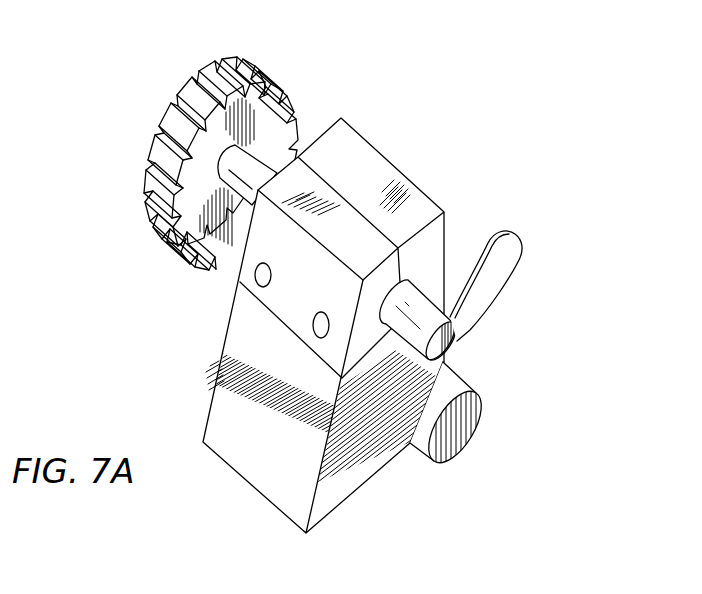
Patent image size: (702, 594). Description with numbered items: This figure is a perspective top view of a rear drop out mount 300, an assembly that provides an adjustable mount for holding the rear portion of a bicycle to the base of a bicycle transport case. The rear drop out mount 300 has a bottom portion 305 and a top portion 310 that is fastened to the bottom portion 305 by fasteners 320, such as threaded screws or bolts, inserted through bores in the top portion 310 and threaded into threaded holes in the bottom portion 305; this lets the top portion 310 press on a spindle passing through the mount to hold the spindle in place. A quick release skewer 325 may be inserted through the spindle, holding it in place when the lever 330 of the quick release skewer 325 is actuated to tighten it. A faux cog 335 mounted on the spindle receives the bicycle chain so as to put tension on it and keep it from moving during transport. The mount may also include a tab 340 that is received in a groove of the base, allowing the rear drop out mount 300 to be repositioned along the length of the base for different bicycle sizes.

The rear drop out mount 300 is at (416, 143).
The bottom portion 305 is at (252, 373).
The top portion 310 is at (280, 238).
The fasteners 320 is at (257, 276).
The quick release skewer 325 is at (443, 340).
The lever 330 is at (503, 268).
The faux cog 335 is at (263, 80).
The tab 340 is at (467, 427).